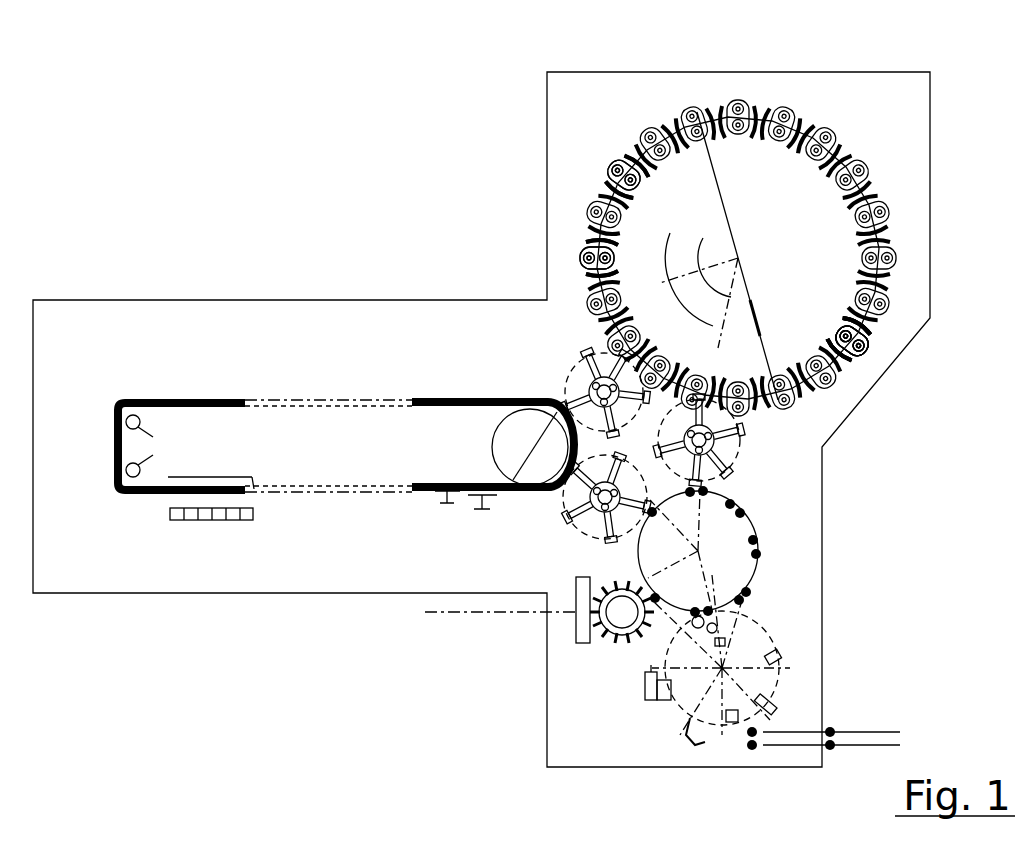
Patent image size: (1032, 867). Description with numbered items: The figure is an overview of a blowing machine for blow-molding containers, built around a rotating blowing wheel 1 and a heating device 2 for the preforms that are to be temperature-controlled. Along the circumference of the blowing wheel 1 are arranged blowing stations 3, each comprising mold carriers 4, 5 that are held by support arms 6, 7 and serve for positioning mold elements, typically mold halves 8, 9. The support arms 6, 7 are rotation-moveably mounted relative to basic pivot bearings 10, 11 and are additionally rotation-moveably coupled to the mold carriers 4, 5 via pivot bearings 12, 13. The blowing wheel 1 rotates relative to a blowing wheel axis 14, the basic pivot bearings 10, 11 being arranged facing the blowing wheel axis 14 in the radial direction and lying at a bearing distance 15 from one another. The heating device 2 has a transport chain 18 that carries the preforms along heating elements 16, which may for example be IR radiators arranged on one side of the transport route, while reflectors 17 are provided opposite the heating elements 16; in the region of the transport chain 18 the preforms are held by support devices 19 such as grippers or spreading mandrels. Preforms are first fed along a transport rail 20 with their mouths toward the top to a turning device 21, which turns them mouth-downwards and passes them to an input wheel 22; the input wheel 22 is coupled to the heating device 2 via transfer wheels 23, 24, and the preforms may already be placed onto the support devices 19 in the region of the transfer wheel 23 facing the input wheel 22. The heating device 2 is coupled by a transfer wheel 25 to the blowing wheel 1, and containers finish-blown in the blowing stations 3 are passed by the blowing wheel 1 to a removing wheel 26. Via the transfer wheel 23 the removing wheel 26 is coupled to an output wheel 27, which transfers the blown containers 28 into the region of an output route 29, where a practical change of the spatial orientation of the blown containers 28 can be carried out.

The blowing wheel 1 is at (632, 167).
The heating device 2 is at (238, 400).
The blowing stations 3 is at (888, 195).
The mold carrier 4 is at (860, 350).
The mold carrier 5 is at (870, 338).
The support arm 6 is at (867, 320).
The support arm 7 is at (865, 318).
The mold half 8 is at (590, 260).
The mold half 9 is at (583, 275).
The basic pivot bearing 10 is at (665, 143).
The basic pivot bearing 11 is at (633, 160).
The pivot bearing 12 is at (615, 178).
The pivot bearing 13 is at (615, 188).
The blowing wheel axis 14 is at (740, 258).
The bearing distance 15 is at (775, 110).
The heating elements 16 is at (233, 522).
The reflectors 17 is at (254, 489).
The transport chain 18 is at (418, 410).
The support devices 19 is at (443, 503).
The transport rail 20 is at (453, 612).
The turning device 21 is at (576, 640).
The input wheel 22 is at (613, 640).
The transfer wheel 23 is at (750, 572).
The transfer wheel 24 is at (573, 532).
The transfer wheel 25 is at (560, 373).
The removing wheel 26 is at (742, 459).
The output wheel 27 is at (780, 677).
The blown containers 28 is at (653, 695).
The output route 29 is at (883, 727).